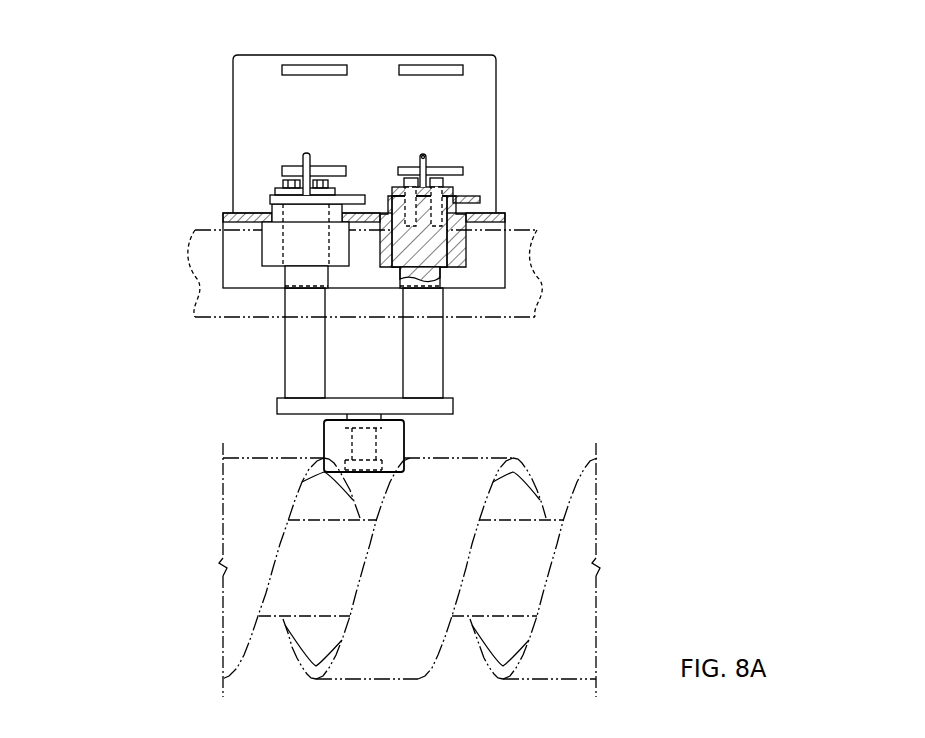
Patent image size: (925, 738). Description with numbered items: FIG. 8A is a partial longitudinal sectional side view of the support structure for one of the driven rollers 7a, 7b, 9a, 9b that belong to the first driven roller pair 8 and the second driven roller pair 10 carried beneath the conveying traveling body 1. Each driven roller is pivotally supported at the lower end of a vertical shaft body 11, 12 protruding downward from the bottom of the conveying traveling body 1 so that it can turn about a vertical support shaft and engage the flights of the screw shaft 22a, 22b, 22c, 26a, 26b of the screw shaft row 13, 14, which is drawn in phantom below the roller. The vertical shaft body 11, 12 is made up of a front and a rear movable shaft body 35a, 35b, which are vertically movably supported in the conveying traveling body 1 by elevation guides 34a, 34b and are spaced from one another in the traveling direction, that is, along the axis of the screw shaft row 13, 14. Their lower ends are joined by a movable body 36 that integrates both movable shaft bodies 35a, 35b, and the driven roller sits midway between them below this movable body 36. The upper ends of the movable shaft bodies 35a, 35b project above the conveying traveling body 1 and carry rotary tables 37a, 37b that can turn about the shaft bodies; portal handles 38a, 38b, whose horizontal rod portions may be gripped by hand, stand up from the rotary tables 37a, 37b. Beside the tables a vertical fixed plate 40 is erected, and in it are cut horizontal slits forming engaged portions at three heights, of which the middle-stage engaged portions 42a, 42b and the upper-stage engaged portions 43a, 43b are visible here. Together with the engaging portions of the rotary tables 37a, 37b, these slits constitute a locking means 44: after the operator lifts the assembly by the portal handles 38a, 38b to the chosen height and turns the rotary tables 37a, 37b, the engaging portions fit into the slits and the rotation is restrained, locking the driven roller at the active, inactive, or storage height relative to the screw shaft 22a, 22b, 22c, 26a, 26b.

The conveying traveling body 1 is at (200, 294).
The driven roller 7a is at (203, 466).
The driven roller 7b is at (203, 466).
The first driven roller pair 8 is at (214, 453).
The driven roller 9a is at (203, 466).
The driven roller 9b is at (338, 450).
The second driven roller pair 10 is at (214, 453).
The vertical shaft body 11 is at (435, 289).
The vertical shaft body 12 is at (458, 352).
The screw shaft row 13 is at (427, 538).
The screw shaft row 14 is at (427, 538).
The screw shaft 22a is at (510, 529).
The screw shaft 22b is at (510, 529).
The screw shaft 22c is at (510, 529).
The screw shaft 26a is at (510, 529).
The screw shaft 26b is at (599, 528).
The elevation guide 34a is at (268, 247).
The elevation guide 34b is at (466, 246).
The movable shaft body 35a is at (298, 347).
The movable shaft body 35b is at (432, 303).
The movable body 36 is at (362, 405).
The rotary table 37a is at (270, 199).
The rotary table 37b is at (480, 200).
The portal handle 38a is at (306, 153).
The portal handle 38b is at (423, 154).
The vertical fixed plate 40 is at (238, 89).
The engaged portion 42a is at (283, 169).
The engaged portion 42b is at (463, 170).
The engaged portion 43a is at (293, 68).
The engaged portion 43b is at (440, 70).
The locking means 44 is at (462, 146).